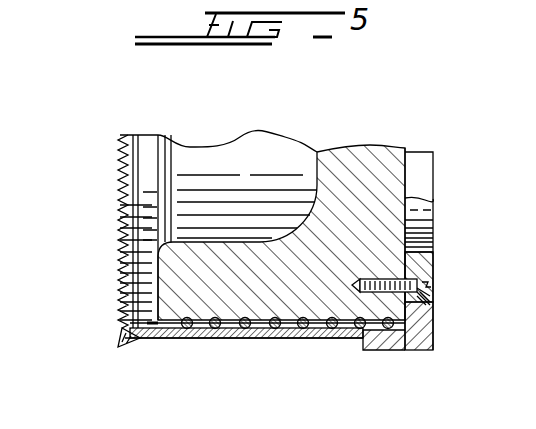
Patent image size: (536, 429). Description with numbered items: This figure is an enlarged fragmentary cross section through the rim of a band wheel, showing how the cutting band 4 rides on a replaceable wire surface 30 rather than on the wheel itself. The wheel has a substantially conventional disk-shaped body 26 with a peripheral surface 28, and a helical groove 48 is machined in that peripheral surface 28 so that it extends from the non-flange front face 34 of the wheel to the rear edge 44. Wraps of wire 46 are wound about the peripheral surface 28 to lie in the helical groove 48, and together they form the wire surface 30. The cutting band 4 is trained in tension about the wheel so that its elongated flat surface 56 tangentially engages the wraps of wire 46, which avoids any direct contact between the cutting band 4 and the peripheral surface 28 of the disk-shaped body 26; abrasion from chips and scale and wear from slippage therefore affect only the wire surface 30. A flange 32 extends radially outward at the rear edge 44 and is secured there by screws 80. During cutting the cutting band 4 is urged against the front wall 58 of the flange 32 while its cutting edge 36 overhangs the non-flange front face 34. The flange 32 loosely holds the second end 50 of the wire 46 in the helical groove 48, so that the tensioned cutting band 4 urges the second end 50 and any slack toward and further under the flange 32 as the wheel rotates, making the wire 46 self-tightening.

The cutting band 4 is at (223, 340).
The disk-shaped body 26 is at (381, 212).
The peripheral surface 28 is at (292, 332).
The wire surface 30 is at (130, 318).
The flange 32 is at (427, 332).
The non-flange front face 34 is at (156, 284).
The cutting edge 36 is at (118, 341).
The rear edge 44 is at (408, 200).
The wire 46 is at (187, 330).
The helical groove 48 is at (213, 318).
The second end 50 is at (390, 330).
The elongated flat surface 56 is at (318, 330).
The front wall 58 is at (363, 340).
The screws 80 is at (427, 275).